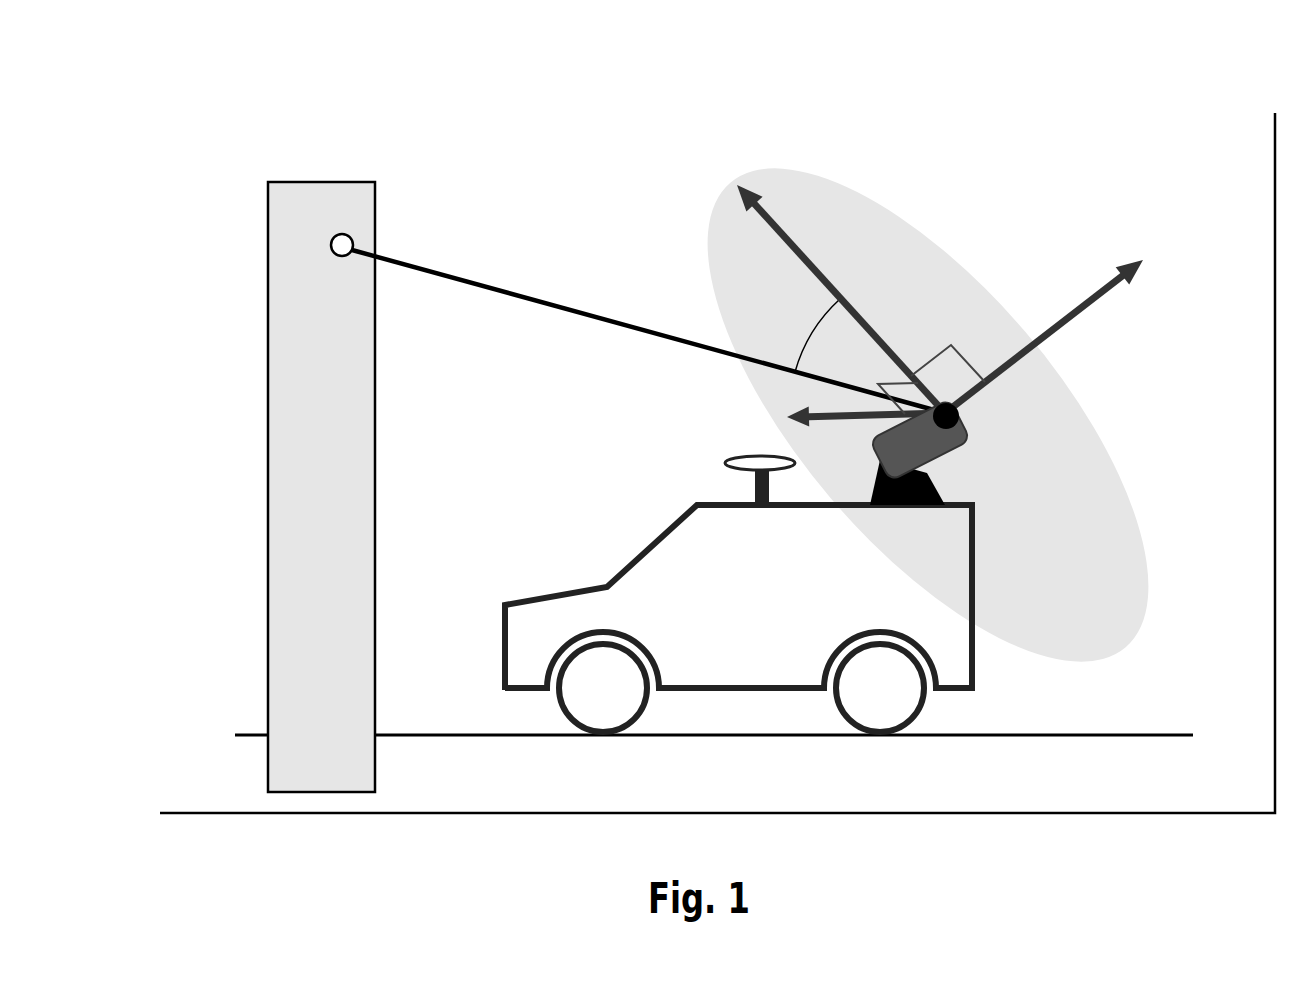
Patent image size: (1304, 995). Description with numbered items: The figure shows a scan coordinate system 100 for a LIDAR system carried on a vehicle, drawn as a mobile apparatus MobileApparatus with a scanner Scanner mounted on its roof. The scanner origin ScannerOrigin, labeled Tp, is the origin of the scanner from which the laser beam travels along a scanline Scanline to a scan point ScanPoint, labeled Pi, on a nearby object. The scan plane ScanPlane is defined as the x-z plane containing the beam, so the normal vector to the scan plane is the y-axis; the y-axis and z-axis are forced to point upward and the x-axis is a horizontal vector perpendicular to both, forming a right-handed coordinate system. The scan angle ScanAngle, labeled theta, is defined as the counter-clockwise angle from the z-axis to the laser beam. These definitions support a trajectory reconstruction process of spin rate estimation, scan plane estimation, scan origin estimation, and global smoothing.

The scan coordinate system 100 is at (717, 500).
The scanner Scanner is at (937, 457).
The origin of the scanner ScannerOrigin is at (1017, 427).
The scan plane ScanPlane is at (867, 203).
The scan point ScanPoint is at (345, 234).
The scan angle ScanAngle is at (763, 313).
The scanline Scanline is at (527, 295).
The mobile apparatus MobileApparatus is at (732, 667).